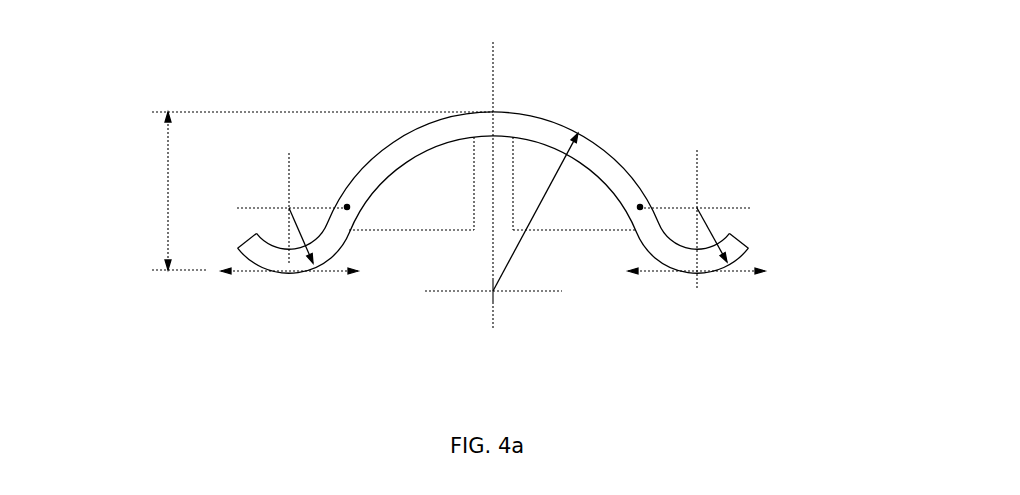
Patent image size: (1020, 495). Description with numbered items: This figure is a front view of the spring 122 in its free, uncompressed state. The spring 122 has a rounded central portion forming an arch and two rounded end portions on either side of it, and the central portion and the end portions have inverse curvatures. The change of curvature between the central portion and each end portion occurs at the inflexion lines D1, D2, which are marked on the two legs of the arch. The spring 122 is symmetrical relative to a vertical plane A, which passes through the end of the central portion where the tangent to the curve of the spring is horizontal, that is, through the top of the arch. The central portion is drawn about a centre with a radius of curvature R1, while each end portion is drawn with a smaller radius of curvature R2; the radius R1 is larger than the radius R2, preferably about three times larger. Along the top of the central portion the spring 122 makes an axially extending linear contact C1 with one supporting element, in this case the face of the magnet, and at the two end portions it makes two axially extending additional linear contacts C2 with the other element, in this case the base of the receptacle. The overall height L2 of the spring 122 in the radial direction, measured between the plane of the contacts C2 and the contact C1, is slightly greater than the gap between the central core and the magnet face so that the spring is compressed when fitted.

The spring 122 is at (628, 99).
The vertical plane A is at (493, 58).
The linear contact C1 is at (493, 112).
The radius of curvature of the central portion R1 is at (515, 250).
The inflexion line D1 is at (347, 204).
The inflexion line D2 is at (642, 206).
The radius of curvature of the end portions R2 is at (296, 225).
The additional linear contact C2 is at (290, 273).
The height L2 is at (168, 191).